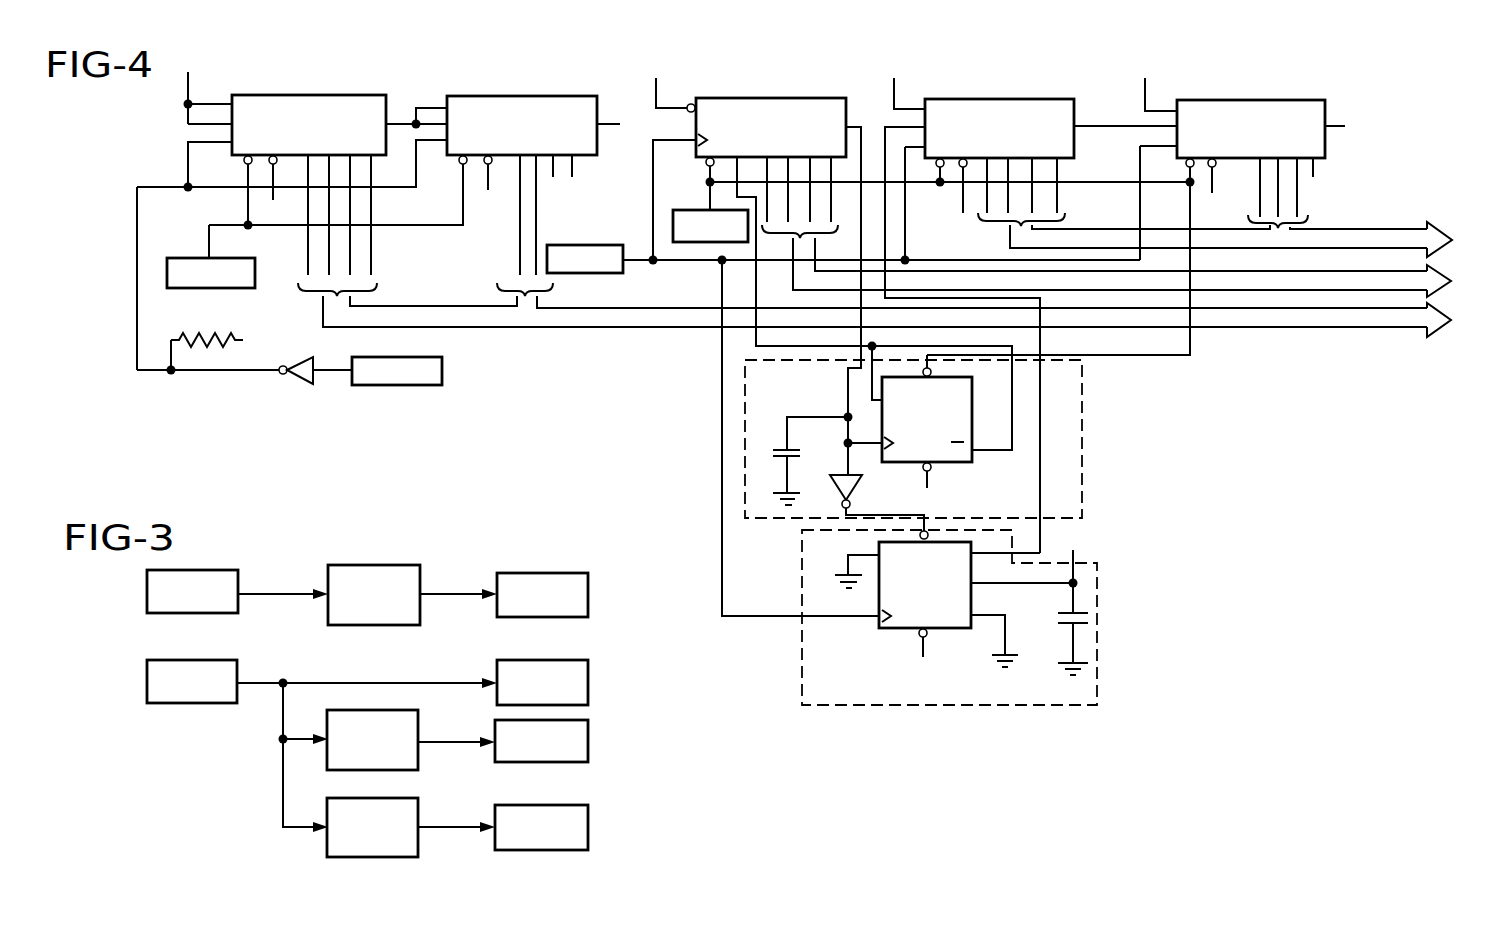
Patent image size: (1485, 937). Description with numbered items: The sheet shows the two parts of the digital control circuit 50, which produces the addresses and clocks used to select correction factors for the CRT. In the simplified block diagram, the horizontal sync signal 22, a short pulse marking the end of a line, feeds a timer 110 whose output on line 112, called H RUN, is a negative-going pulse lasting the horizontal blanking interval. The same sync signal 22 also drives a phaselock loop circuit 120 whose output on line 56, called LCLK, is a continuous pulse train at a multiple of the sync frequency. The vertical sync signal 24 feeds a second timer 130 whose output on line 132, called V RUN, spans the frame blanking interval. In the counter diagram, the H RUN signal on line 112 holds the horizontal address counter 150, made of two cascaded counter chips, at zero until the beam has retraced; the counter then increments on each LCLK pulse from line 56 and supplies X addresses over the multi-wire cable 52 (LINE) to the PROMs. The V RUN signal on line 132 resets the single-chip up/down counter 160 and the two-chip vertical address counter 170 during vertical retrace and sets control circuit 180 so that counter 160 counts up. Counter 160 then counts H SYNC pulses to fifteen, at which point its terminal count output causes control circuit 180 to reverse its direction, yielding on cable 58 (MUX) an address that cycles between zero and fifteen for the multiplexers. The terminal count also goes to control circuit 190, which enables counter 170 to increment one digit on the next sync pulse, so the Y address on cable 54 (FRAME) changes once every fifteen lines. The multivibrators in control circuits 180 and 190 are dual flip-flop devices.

In FIG. 4, the horizontal sync (H SYNC) signal 22 is at (577, 245).
In FIG. 3, the horizontal sync (H SYNC) signal 22 is at (438, 683).
In FIG. 3, the vertical sync (V SYNC) signal 24 is at (265, 596).
In FIG. 4, the digital control circuit 50 is at (574, 71).
In FIG. 4, the line (X address) signal 52 is at (578, 328).
In FIG. 4, the frame (Y address) signal 54 is at (1340, 229).
In FIG. 4, the LCLK pixel clock signal 56 is at (377, 385).
In FIG. 3, the LCLK pixel clock signal 56 is at (436, 827).
In FIG. 4, the MUX interpolation address signal 58 is at (1318, 291).
In FIG. 3, the timer 110 is at (418, 758).
In FIG. 4, the H RUN signal line 112 is at (190, 288).
In FIG. 3, the H RUN signal line 112 is at (436, 742).
In FIG. 3, the phaselock loop (PLL) circuit 120 is at (375, 857).
In FIG. 3, the timer 130 is at (371, 565).
In FIG. 4, the V RUN signal line 132 is at (695, 243).
In FIG. 3, the V RUN signal line 132 is at (446, 594).
In FIG. 4, the horizontal address counter 150 is at (460, 96).
In FIG. 4, the up/down counter 160 is at (740, 98).
In FIG. 4, the vertical address counter 170 is at (1015, 99).
In FIG. 4, the control circuit 180 is at (1082, 413).
In FIG. 4, the control circuit 190 is at (1097, 598).